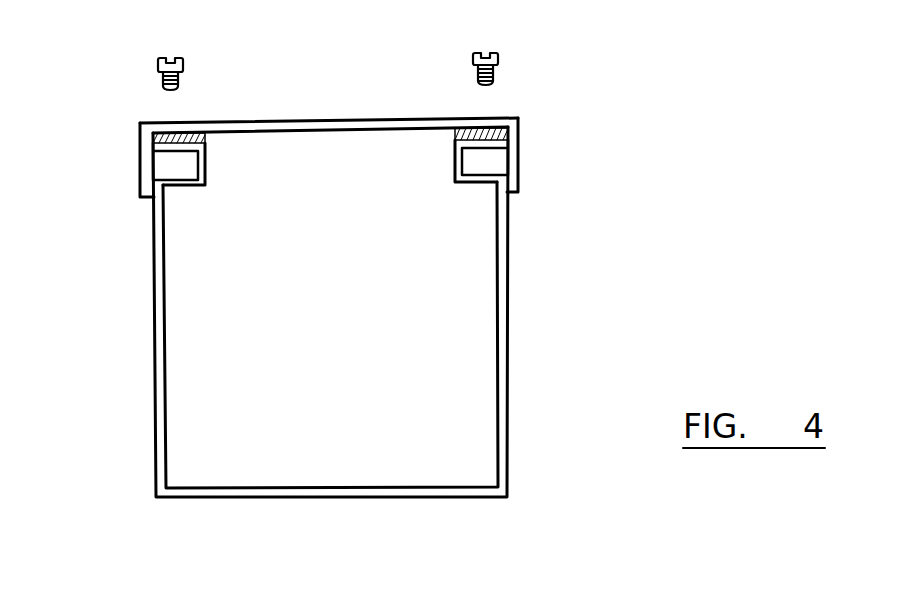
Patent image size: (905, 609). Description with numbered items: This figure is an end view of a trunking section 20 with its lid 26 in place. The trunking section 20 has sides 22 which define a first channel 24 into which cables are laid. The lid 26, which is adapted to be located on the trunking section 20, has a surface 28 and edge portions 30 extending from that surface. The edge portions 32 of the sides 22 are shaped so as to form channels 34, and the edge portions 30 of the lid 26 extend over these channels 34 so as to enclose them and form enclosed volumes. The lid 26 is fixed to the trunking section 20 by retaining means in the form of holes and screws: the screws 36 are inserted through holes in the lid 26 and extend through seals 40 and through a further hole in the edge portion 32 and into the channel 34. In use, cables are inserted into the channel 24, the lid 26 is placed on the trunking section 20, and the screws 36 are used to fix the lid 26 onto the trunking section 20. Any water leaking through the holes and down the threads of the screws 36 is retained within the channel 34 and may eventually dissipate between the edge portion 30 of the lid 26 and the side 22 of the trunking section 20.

The trunking section 20 is at (399, 511).
The sides 22 is at (156, 366).
The first channel 24 is at (222, 414).
The lid 26 is at (287, 107).
The surface 28 is at (386, 120).
The edge portions 30 is at (150, 183).
The edge portions 32 is at (222, 177).
The channels 34 is at (165, 162).
The screws 36 is at (160, 62).
The seals 40 is at (205, 141).